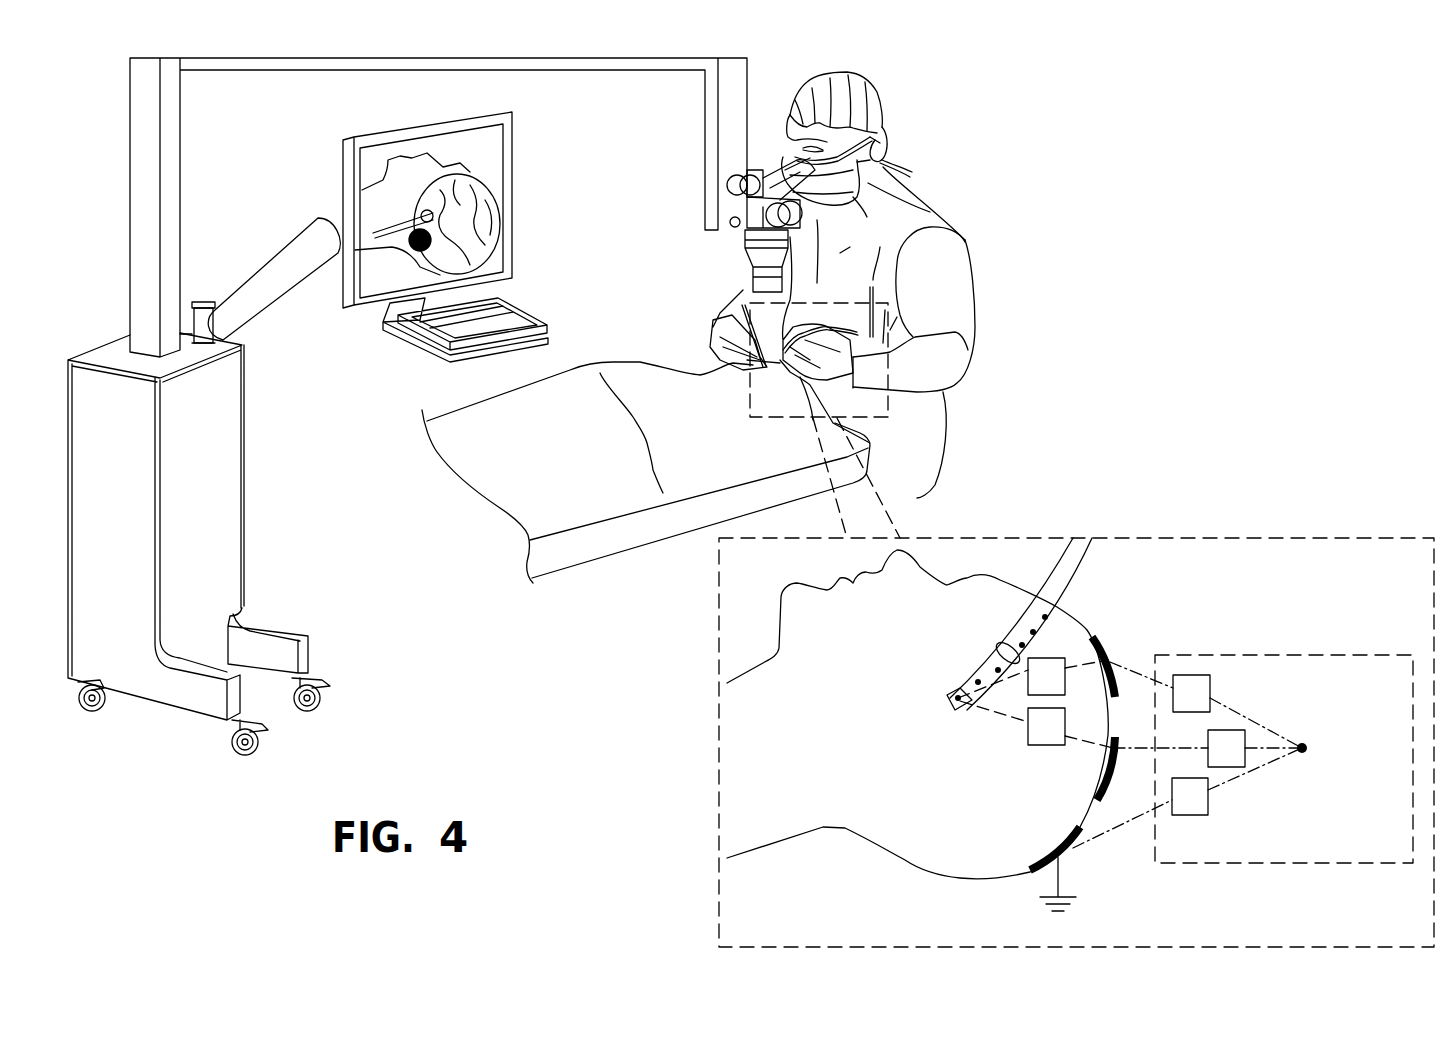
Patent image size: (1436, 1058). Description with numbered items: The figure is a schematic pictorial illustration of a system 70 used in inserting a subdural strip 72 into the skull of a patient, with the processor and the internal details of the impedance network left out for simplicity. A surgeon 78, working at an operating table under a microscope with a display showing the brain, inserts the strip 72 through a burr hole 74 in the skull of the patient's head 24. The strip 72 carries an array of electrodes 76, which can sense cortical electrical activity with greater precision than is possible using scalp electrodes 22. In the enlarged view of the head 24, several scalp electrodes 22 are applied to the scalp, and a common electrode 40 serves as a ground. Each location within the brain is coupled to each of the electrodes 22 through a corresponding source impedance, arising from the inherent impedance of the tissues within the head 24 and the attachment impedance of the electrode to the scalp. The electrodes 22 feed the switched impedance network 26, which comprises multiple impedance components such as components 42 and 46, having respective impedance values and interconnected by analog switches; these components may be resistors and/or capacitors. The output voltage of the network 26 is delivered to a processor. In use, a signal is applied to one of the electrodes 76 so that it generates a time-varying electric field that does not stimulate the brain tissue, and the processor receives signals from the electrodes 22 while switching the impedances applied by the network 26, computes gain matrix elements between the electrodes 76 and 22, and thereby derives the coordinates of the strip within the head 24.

The system 70 is at (751, 502).
The surgeon 78 is at (928, 203).
The subdural strip 72 is at (1007, 624).
The burr hole 74 is at (1003, 645).
The electrodes 76 is at (968, 699).
The electrodes 22 is at (1103, 638).
The switched impedance network 26 is at (1243, 739).
The impedance component 42 is at (1210, 695).
The impedance component 46 is at (1208, 803).
The common electrode 40 is at (1040, 856).
The head 24 is at (893, 855).